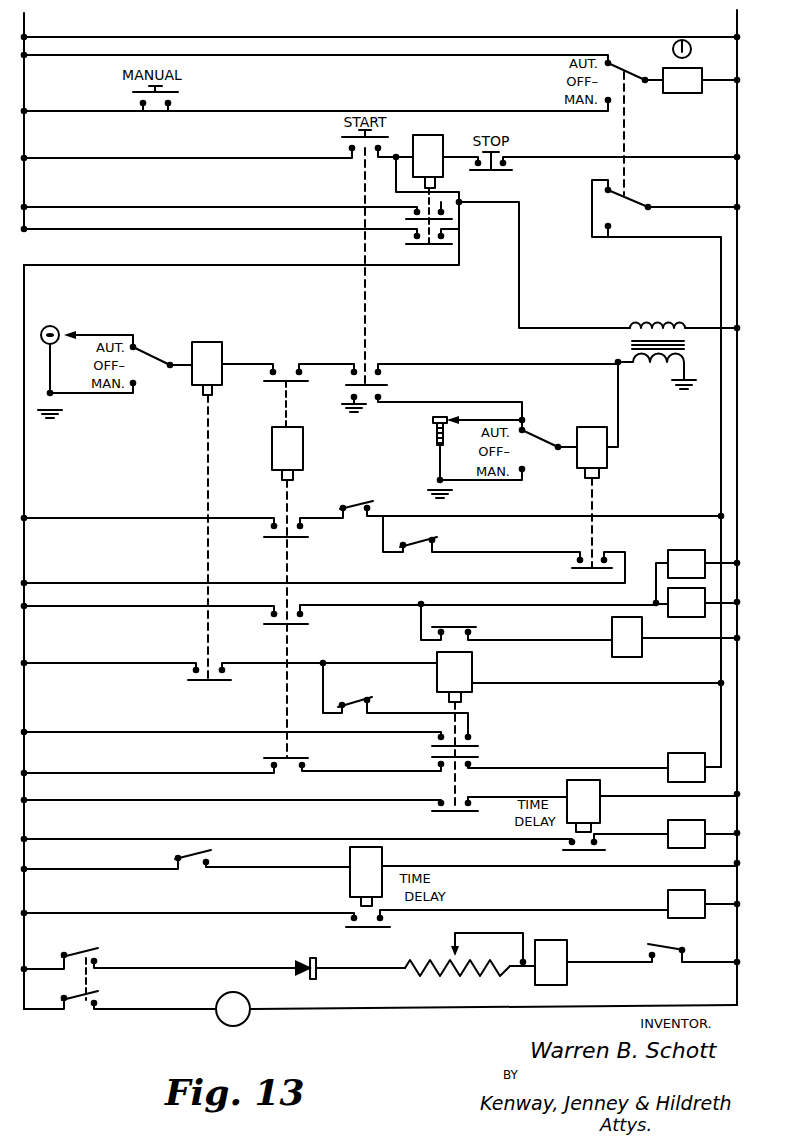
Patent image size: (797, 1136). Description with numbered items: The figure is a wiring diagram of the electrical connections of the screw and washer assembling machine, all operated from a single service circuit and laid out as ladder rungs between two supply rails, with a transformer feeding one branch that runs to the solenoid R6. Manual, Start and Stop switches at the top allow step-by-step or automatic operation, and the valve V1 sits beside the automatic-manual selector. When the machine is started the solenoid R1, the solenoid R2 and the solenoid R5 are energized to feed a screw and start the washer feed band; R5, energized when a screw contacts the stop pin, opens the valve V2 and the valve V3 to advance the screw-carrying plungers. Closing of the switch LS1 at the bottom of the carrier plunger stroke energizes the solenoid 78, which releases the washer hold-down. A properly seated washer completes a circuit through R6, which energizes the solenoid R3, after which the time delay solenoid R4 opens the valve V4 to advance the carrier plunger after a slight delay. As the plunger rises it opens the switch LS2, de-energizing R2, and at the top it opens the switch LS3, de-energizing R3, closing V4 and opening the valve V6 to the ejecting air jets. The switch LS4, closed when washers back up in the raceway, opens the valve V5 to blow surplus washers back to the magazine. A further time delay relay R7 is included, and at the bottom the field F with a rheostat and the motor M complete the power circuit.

The solenoid 78 is at (619, 646).
The valve V1 is at (682, 80).
The valve V2 is at (686, 564).
The valve V3 is at (686, 602).
The valve V4 is at (686, 834).
The valve V5 is at (686, 904).
The valve V6 is at (686, 767).
The solenoid R1 is at (428, 161).
The solenoid R2 is at (287, 453).
The solenoid R3 is at (454, 677).
The time delay solenoid R4 is at (583, 806).
The solenoid R5 is at (592, 452).
The solenoid R6 is at (207, 368).
The time delay solenoid R7 is at (366, 876).
The switch LS1 is at (418, 557).
The switch LS2 is at (357, 494).
The switch LS3 is at (354, 692).
The switch LS4 is at (193, 874).
The field winding F is at (551, 962).
The motor M is at (233, 1009).